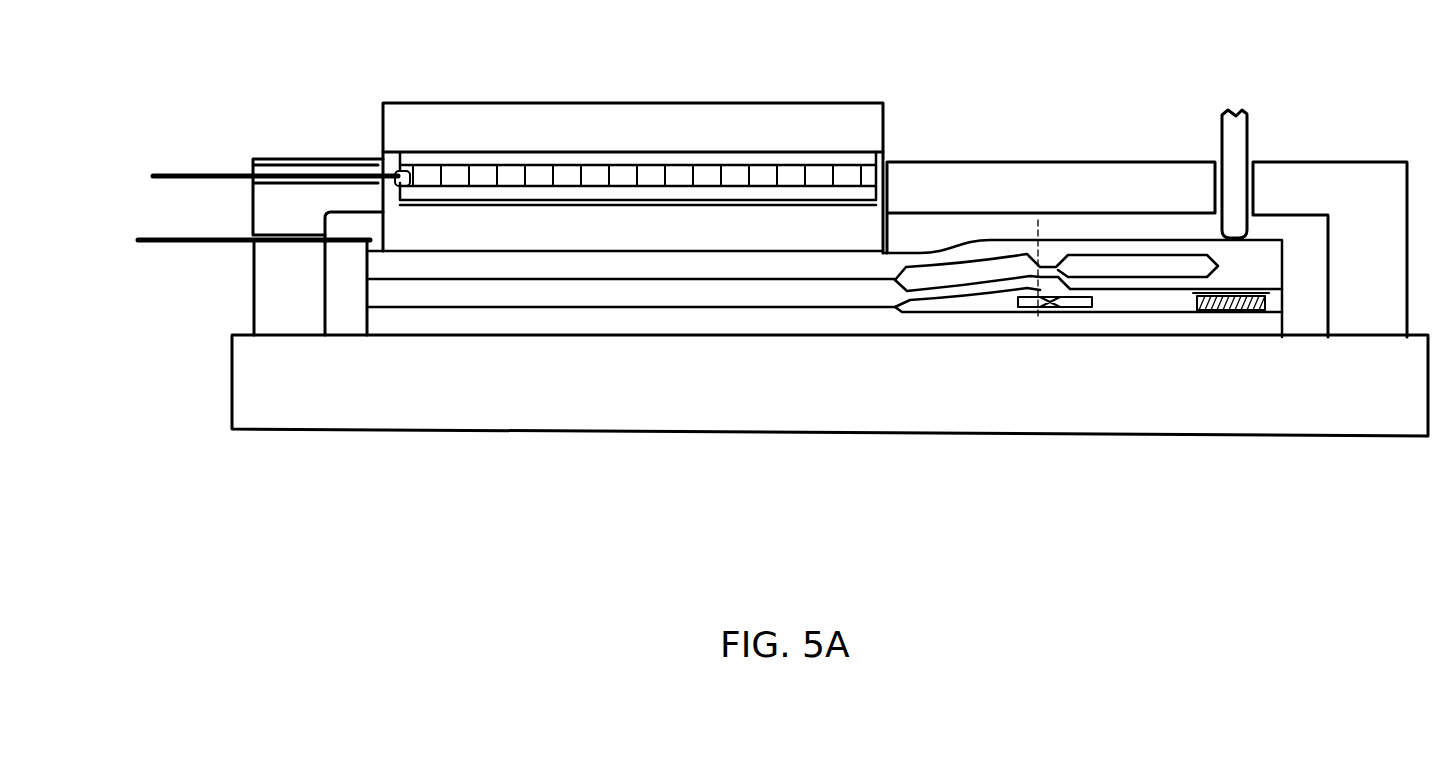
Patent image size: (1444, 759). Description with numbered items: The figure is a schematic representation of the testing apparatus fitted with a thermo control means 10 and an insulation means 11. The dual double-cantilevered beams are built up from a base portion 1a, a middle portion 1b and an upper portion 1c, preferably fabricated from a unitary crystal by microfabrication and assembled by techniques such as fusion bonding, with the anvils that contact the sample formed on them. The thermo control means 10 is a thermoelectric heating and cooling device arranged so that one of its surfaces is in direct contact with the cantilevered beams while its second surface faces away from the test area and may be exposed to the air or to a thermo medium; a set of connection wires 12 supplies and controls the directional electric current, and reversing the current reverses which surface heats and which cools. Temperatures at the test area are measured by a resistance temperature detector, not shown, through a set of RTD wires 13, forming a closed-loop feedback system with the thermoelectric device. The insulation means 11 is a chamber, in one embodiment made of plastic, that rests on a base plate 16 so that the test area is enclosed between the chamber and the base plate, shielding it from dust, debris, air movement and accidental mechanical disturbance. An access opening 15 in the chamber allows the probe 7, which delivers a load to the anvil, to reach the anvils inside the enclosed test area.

The base portion 1a is at (415, 320).
The middle portion 1b is at (478, 288).
The upper portion 1c is at (578, 267).
The probe 7 is at (1240, 136).
The thermo control means 10 is at (497, 133).
The insulation means 11 is at (930, 193).
The connection wires 12 is at (173, 172).
The RTD wires 13 is at (165, 233).
The access opening 15 is at (1216, 160).
The base plate 16 is at (1085, 435).